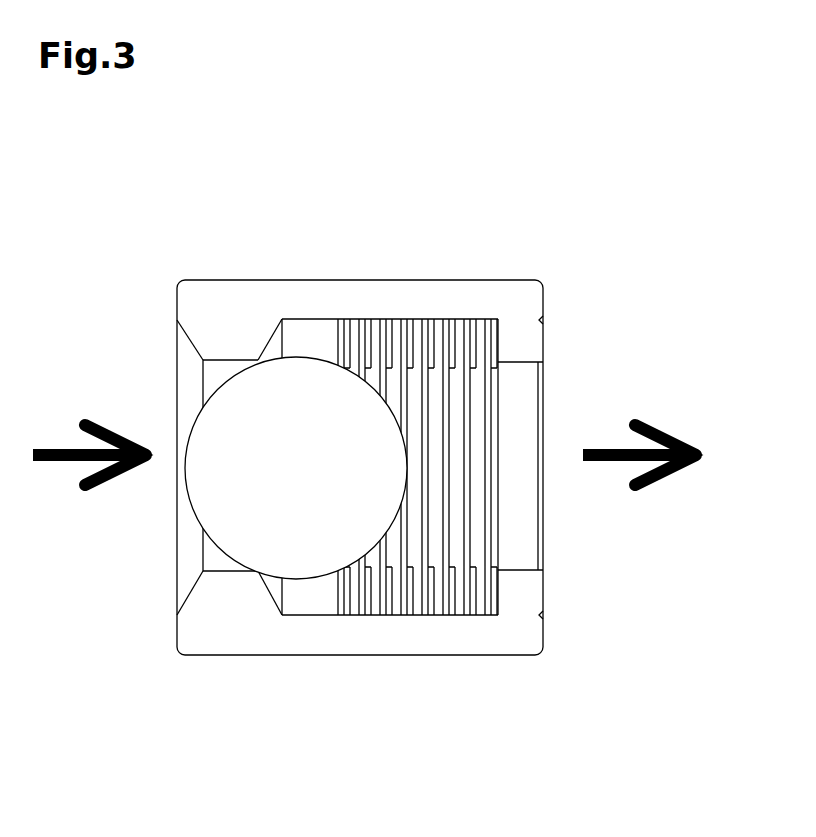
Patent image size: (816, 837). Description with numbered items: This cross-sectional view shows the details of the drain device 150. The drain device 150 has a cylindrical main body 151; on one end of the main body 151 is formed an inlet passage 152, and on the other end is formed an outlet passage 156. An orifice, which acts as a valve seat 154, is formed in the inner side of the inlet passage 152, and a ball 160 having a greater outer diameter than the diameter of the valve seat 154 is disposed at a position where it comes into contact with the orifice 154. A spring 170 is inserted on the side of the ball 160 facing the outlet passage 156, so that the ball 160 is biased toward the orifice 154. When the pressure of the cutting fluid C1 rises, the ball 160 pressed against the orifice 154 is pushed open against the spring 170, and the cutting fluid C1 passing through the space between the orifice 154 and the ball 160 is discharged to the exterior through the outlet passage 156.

The drain device 150 is at (604, 213).
The main body 151 is at (343, 303).
The inlet passage 152 is at (188, 377).
The orifice (valve seat) 154 is at (257, 572).
The outlet passage 156 is at (523, 537).
The ball 160 is at (306, 481).
The spring 170 is at (482, 397).
The cutting fluid C1 is at (48, 462).